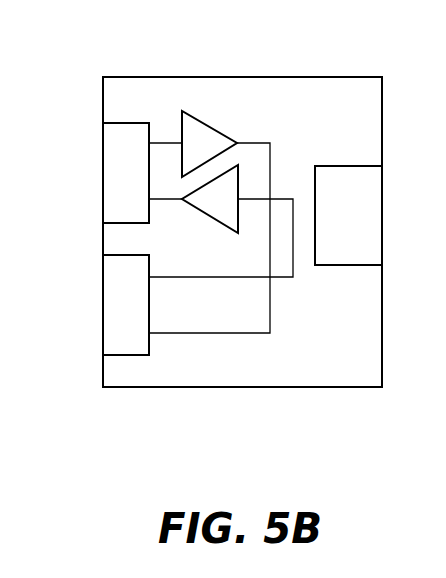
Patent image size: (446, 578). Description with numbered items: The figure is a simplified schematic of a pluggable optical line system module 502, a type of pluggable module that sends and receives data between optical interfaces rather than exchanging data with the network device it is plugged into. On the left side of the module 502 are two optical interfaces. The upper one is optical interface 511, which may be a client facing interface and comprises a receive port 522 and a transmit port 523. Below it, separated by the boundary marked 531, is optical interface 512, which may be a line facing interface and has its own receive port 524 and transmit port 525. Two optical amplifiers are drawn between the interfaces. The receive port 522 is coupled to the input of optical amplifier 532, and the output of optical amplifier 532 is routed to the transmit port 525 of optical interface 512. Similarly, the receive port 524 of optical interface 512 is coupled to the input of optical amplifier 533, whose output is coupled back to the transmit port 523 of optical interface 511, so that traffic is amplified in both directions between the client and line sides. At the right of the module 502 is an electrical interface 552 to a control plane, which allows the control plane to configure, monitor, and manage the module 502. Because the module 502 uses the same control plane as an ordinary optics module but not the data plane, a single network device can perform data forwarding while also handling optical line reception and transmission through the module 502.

The pluggable optical line system module 502 is at (250, 76).
The optical interface 511 is at (124, 122).
The optical interface 512 is at (127, 355).
The receive port 522 is at (103, 143).
The transmit port 523 is at (103, 200).
The receive port 524 is at (103, 277).
The transmit port 525 is at (103, 333).
The port boundary / separator 531 is at (127, 223).
The optical amplifier 532 is at (205, 124).
The optical amplifier 533 is at (210, 216).
The electrical interface 552 is at (327, 165).